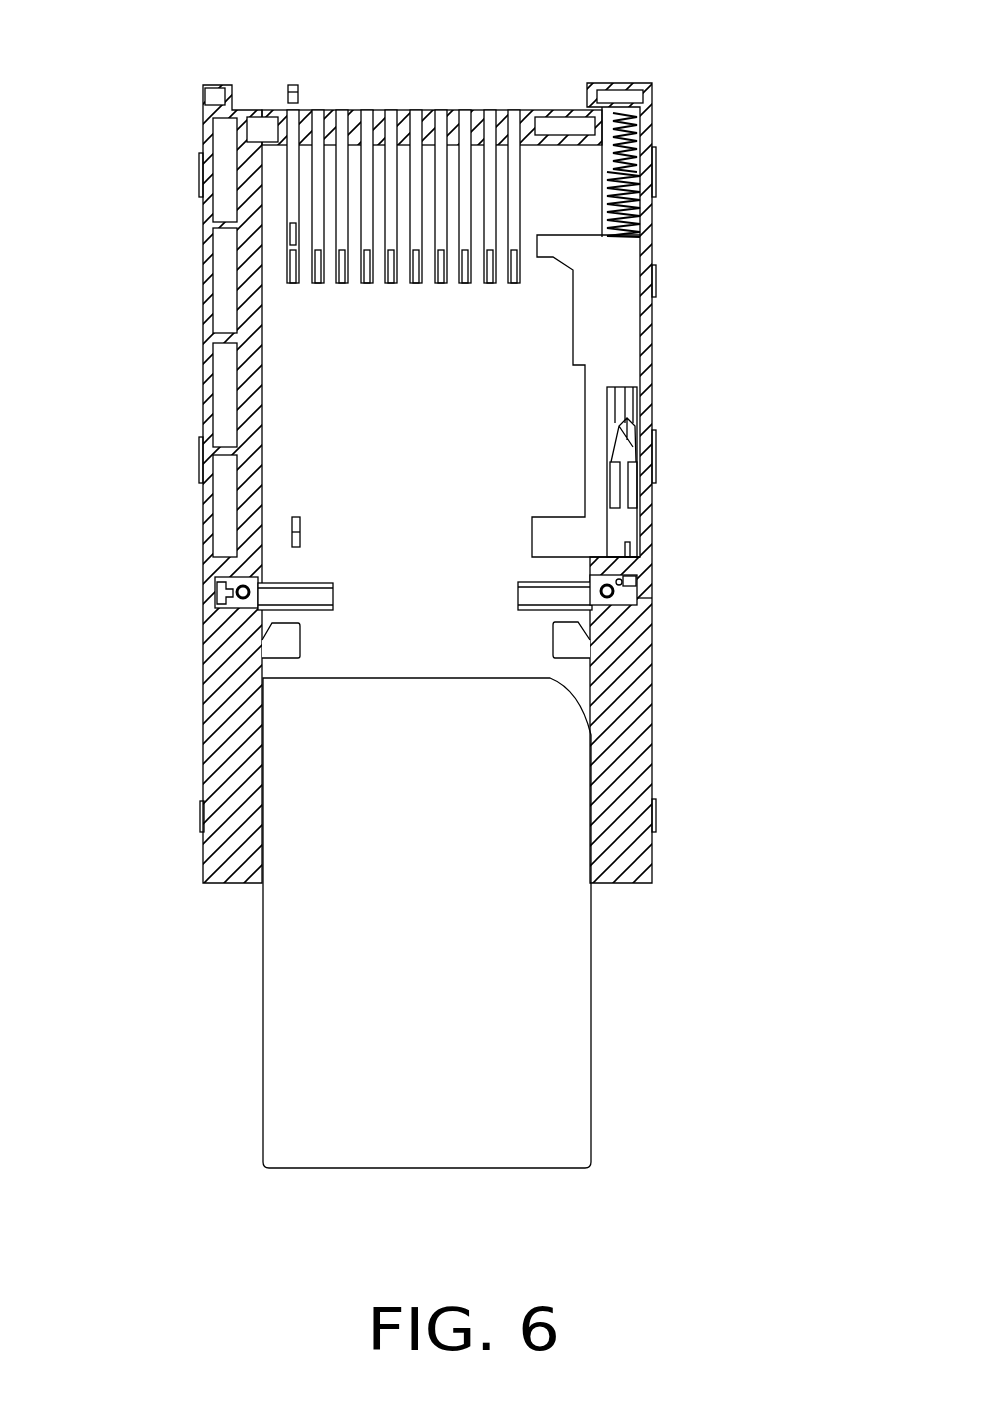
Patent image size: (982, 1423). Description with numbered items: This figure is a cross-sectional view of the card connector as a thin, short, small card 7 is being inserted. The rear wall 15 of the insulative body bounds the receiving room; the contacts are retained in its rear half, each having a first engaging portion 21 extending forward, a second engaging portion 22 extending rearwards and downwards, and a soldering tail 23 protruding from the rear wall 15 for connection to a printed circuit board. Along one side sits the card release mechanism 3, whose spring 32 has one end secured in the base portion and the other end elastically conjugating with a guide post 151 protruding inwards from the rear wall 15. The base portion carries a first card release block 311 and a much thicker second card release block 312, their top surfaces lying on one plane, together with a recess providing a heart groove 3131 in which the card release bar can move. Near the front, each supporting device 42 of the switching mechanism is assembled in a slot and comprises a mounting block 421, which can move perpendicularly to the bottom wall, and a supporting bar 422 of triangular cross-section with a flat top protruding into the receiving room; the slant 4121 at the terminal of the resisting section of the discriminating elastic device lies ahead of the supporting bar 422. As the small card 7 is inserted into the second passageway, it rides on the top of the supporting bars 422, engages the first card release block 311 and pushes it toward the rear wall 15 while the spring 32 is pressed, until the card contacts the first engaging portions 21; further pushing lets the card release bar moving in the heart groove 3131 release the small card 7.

The rear wall 15 is at (440, 108).
The guide post 151 is at (615, 82).
The soldering tail 23 is at (290, 83).
The second engaging portion 22 is at (290, 262).
The first engaging portion 21 is at (290, 525).
The spring 32 is at (646, 131).
The second card release block 312 is at (641, 205).
The card release mechanism 3 is at (593, 407).
The heart groove 3131 is at (636, 418).
The first card release block 311 is at (547, 537).
The mounting block 421 is at (650, 567).
The slant 4121 is at (652, 598).
The supporting device 42 is at (213, 582).
The supporting bar 422 is at (287, 603).
The small card 7 is at (565, 901).